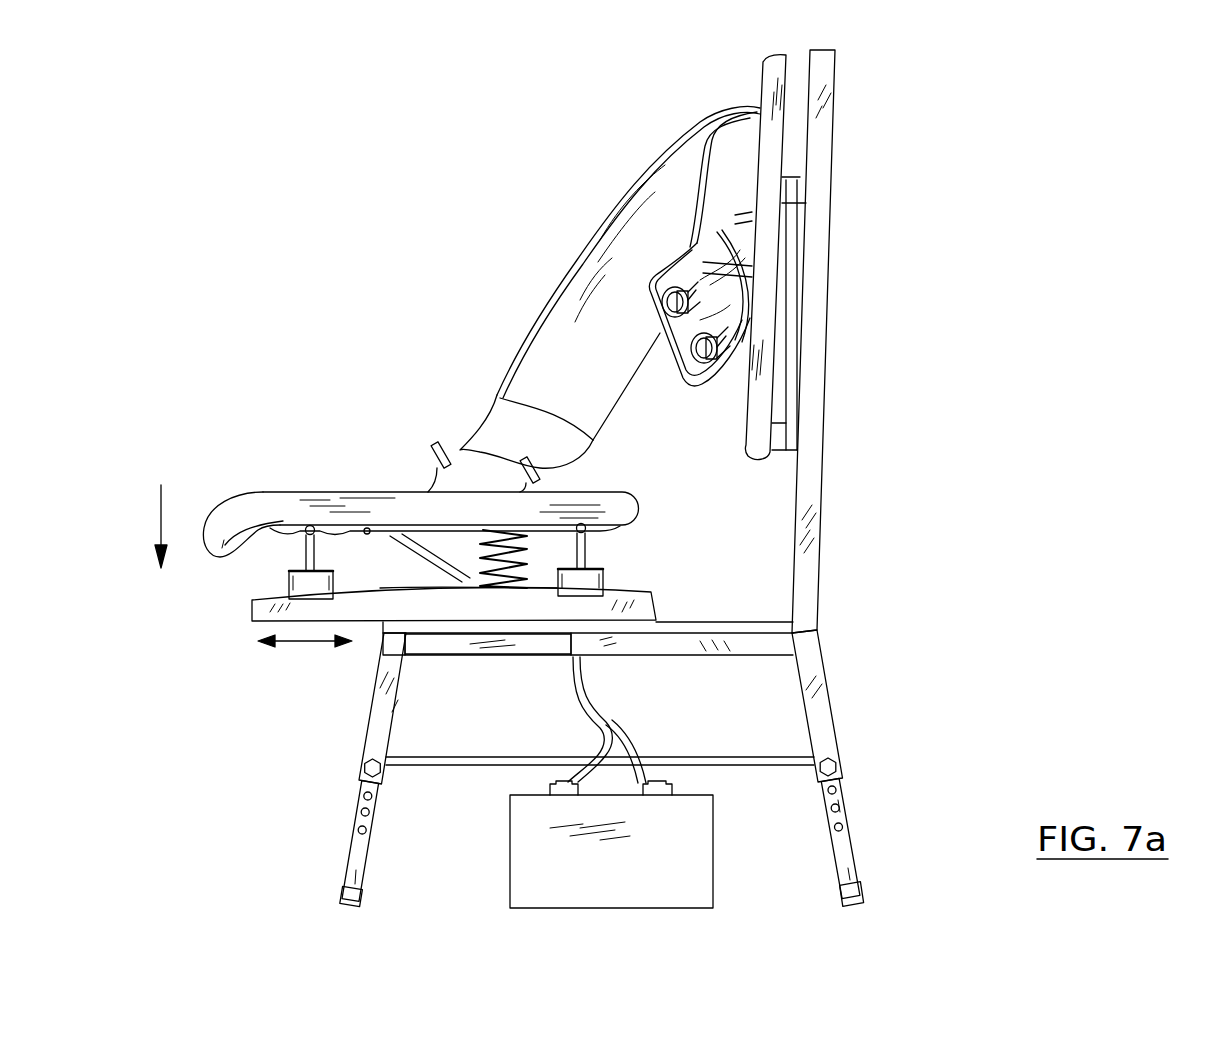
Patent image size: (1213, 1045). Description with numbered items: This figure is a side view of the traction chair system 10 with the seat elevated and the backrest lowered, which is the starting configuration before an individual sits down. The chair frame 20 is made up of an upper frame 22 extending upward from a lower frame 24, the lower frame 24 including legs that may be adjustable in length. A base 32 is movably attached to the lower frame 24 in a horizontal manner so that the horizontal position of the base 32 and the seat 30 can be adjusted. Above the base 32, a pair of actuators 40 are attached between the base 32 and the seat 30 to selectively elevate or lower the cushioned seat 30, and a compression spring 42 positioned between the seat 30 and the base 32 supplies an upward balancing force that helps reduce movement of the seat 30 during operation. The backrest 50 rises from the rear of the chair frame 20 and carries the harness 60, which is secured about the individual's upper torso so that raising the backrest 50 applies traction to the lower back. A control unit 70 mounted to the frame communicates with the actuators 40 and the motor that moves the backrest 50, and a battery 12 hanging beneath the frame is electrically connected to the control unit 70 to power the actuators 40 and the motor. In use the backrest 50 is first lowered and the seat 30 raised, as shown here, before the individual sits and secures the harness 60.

The traction chair system 10 is at (1074, 107).
The battery 12 is at (705, 880).
The chair frame 20 is at (826, 628).
The upper frame 22 is at (817, 337).
The lower frame 24 is at (827, 743).
The seat 30 is at (267, 500).
The base 32 is at (258, 605).
The actuator 40 is at (300, 559).
The compression spring 42 is at (480, 563).
The backrest 50 is at (768, 68).
The harness 60 is at (577, 263).
The control unit 70 is at (420, 648).